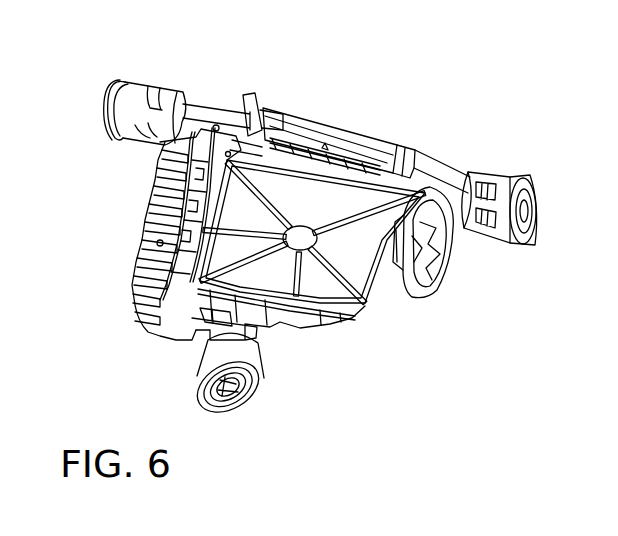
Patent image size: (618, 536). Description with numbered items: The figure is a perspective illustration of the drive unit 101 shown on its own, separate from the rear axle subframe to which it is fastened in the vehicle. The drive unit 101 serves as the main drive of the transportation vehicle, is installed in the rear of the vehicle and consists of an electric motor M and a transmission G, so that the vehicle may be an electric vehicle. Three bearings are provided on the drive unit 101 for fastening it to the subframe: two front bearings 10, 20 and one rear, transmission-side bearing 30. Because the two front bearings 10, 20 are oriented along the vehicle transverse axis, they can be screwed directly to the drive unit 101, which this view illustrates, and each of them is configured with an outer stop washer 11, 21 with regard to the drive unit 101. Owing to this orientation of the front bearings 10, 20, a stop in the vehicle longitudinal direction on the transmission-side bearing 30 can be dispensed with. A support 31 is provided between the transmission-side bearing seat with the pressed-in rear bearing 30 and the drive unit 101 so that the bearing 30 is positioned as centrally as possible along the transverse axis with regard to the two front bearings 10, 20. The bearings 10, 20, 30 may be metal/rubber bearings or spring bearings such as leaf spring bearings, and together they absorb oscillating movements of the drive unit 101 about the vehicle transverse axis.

The drive unit 101 is at (409, 105).
The electric motor M is at (353, 125).
The transmission G is at (352, 274).
The bearing 10 is at (155, 90).
The outer stop washer 11 is at (130, 77).
The bearing 20 is at (500, 178).
The outer stop washer 21 is at (537, 180).
The bearing 30 is at (250, 373).
The support 31 is at (255, 337).